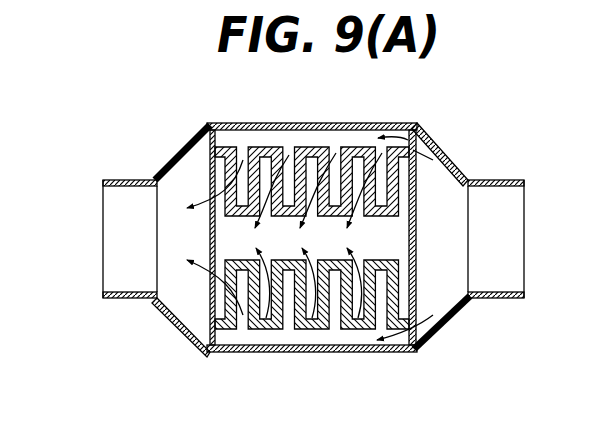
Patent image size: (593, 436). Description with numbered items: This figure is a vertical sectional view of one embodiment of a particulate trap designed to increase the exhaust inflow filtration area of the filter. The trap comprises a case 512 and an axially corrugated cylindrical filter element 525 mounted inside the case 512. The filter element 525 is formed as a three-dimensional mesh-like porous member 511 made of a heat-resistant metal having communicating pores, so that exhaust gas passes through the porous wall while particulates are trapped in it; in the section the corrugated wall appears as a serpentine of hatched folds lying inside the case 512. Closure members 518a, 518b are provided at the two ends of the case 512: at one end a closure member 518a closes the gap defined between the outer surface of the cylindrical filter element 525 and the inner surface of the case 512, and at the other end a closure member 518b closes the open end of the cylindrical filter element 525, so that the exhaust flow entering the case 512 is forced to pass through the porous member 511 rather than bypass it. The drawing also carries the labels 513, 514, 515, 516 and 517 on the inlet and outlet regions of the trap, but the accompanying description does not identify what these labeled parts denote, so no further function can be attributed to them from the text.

The three-dimensional mesh-like porous member 511 is at (345, 330).
The case 512 is at (452, 150).
The outlet pipe 513 is at (501, 278).
The inlet pipe 514 is at (131, 278).
The outlet 515 is at (445, 238).
The inlet 516 is at (148, 238).
The upper filter element 517 is at (299, 332).
The closure member 518a is at (197, 330).
The closure member 518b is at (416, 270).
The axially corrugated cylindrical filter element 525 is at (422, 204).